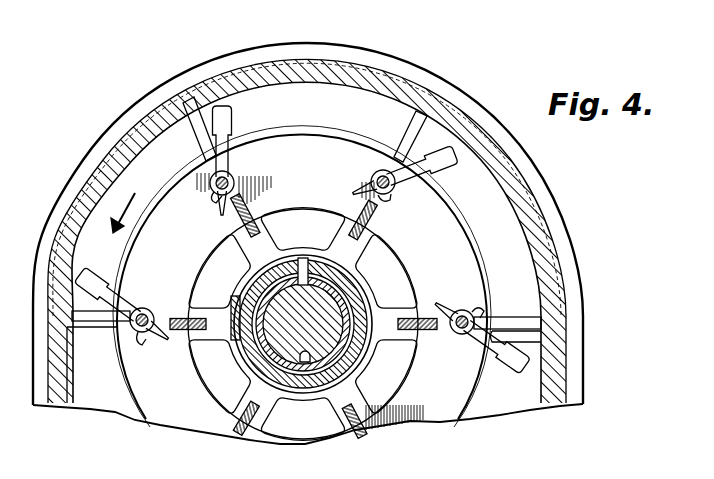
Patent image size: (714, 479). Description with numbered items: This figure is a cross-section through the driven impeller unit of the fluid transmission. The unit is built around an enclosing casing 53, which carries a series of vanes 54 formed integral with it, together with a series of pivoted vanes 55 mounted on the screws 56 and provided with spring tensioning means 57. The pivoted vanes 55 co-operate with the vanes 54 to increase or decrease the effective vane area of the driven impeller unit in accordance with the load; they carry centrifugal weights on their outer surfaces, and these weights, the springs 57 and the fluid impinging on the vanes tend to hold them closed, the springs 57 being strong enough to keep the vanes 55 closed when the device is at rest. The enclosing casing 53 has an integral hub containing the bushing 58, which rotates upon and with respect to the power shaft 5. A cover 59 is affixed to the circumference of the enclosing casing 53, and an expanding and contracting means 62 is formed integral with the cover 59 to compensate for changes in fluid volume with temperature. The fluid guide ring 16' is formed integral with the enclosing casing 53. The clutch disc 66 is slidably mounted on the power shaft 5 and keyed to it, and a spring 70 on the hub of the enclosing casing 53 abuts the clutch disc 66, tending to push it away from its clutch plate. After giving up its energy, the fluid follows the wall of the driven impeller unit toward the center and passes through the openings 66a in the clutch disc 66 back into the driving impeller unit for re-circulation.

The expanding and contracting means 62 is at (147, 95).
The cover 59 is at (228, 72).
The enclosing casing 53 is at (417, 97).
The fluid guide ring 16' is at (304, 276).
The clutch disc 66 is at (376, 238).
The openings in clutch disc 66a is at (383, 278).
The spring 70 is at (361, 281).
The power shaft 5 is at (280, 345).
The bushing 58 is at (305, 361).
The vanes 54 is at (203, 150).
The pivoted vanes 55 is at (237, 118).
The screws 56 is at (235, 176).
The springs 57 is at (211, 192).